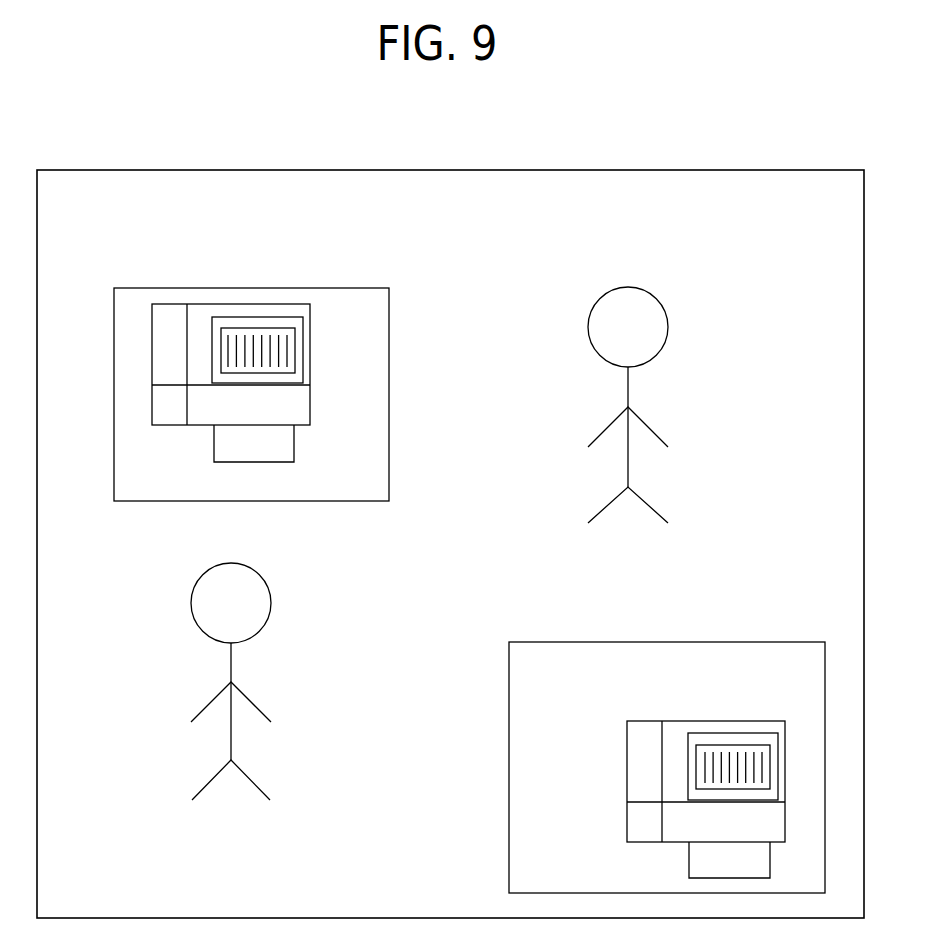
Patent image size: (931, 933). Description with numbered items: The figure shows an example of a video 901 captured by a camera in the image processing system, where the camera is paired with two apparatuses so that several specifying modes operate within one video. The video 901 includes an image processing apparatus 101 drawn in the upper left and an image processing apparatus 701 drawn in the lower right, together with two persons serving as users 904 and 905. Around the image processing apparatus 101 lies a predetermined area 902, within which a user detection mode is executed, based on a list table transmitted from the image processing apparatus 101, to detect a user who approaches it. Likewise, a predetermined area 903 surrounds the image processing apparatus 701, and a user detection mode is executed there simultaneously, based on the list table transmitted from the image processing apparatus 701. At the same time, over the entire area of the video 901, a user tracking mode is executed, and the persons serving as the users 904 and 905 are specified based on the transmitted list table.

The video 901 is at (727, 170).
The predetermined area 902 is at (301, 288).
The image processing apparatus 101 is at (310, 403).
The user 905 is at (630, 287).
The user 904 is at (271, 598).
The predetermined area 903 is at (737, 642).
The image processing apparatus 701 is at (627, 764).